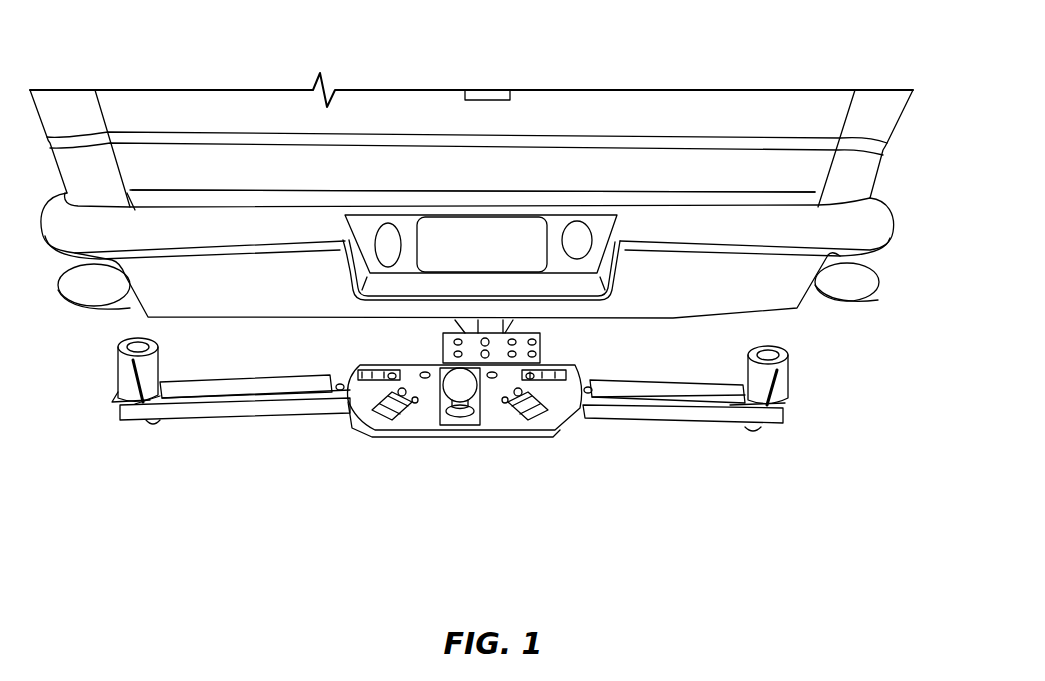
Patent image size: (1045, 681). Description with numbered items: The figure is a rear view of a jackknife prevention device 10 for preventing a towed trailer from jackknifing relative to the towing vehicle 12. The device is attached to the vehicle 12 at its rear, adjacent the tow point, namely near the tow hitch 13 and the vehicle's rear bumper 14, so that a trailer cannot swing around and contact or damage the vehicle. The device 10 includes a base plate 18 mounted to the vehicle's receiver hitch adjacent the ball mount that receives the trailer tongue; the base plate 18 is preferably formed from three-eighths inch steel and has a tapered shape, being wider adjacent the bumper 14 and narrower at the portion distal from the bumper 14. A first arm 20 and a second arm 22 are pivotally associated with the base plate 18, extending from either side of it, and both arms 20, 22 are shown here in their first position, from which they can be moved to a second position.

The jackknife prevention device 10 is at (807, 373).
The vehicle 12 is at (810, 108).
The tow hitch 13 is at (477, 335).
The rear bumper 14 is at (887, 232).
The base plate 18 is at (382, 432).
The first arm 20 is at (677, 413).
The second arm 22 is at (227, 408).